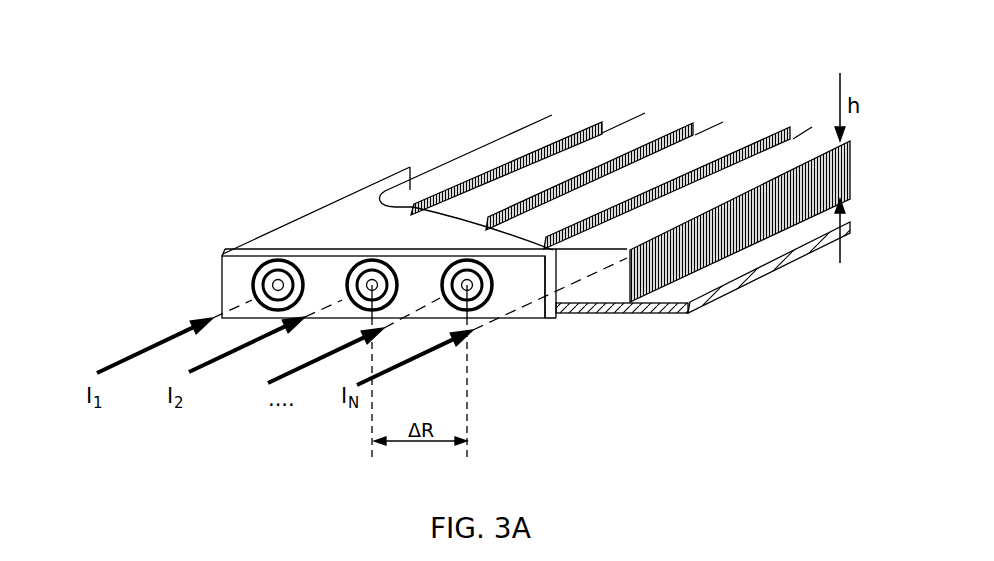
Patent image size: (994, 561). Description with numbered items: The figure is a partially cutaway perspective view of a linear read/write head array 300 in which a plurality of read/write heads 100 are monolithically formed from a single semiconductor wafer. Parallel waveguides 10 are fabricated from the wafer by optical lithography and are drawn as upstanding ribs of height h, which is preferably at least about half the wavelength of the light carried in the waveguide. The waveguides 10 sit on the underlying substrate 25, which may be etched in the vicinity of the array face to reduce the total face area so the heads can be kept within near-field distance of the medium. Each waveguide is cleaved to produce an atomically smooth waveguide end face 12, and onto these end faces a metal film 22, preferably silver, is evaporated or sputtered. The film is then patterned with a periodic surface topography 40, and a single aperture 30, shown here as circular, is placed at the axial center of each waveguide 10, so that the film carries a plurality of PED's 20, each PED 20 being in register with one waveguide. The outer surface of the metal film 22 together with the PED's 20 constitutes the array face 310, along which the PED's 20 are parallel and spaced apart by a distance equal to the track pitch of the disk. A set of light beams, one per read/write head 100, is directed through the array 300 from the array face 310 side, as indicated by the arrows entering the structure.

The read/write head array 300 is at (427, 142).
The read/write head 100 is at (573, 212).
The waveguide 10 is at (798, 152).
The PED 20 is at (236, 271).
The metal film 22 is at (547, 305).
The aperture 30 is at (274, 281).
The periodic surface topography 40 is at (295, 266).
The array face 310 is at (230, 300).
The waveguide end face 12 is at (607, 270).
The substrate 25 is at (738, 283).